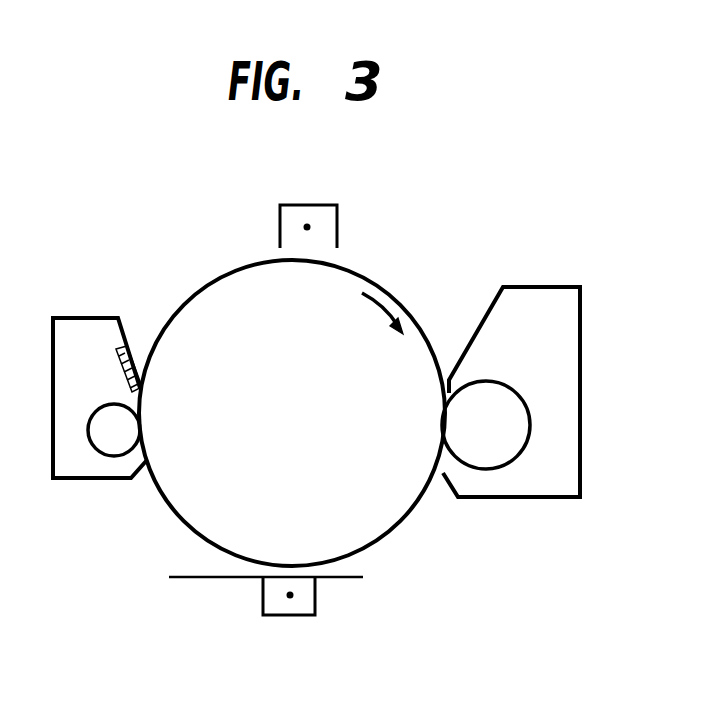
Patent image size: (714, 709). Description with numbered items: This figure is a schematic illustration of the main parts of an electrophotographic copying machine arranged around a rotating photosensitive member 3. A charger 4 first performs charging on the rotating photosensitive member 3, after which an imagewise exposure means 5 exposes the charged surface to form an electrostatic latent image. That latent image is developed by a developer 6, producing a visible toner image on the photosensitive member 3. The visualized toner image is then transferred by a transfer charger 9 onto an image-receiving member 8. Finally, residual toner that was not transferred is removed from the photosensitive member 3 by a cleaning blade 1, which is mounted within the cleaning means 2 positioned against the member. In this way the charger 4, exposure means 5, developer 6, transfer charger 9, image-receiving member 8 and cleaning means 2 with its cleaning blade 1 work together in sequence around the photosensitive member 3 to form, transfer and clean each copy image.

The cleaning blade 1 is at (134, 357).
The cleaning means 2 is at (73, 480).
The photosensitive member 3 is at (210, 284).
The charger 4 is at (328, 205).
The imagewise exposure means 5 is at (391, 295).
The developer 6 is at (567, 287).
The image-receiving member 8 is at (186, 580).
The transfer charger 9 is at (275, 617).